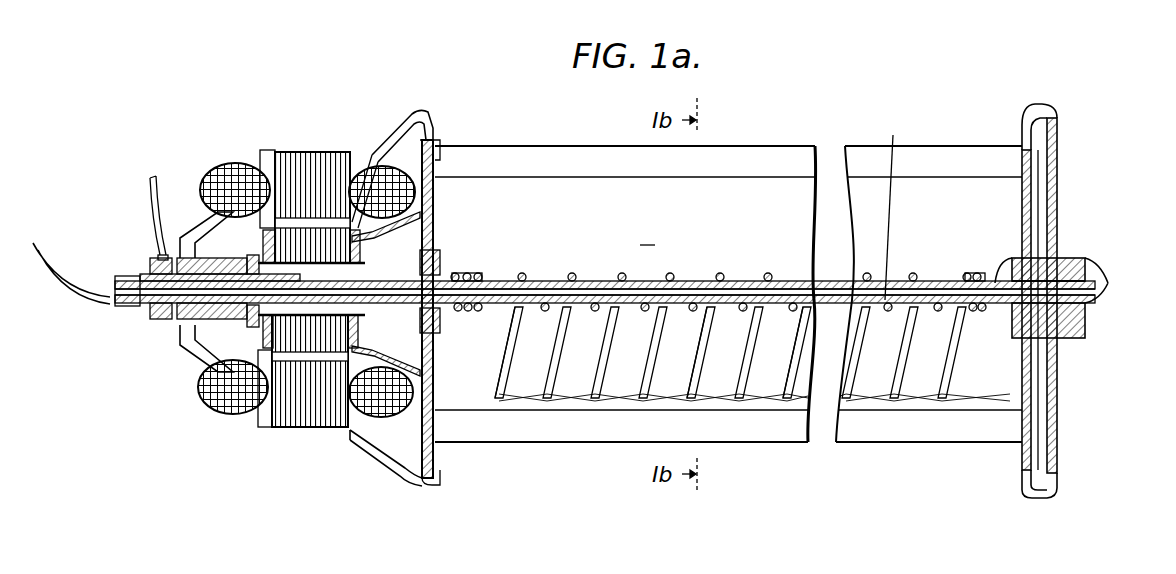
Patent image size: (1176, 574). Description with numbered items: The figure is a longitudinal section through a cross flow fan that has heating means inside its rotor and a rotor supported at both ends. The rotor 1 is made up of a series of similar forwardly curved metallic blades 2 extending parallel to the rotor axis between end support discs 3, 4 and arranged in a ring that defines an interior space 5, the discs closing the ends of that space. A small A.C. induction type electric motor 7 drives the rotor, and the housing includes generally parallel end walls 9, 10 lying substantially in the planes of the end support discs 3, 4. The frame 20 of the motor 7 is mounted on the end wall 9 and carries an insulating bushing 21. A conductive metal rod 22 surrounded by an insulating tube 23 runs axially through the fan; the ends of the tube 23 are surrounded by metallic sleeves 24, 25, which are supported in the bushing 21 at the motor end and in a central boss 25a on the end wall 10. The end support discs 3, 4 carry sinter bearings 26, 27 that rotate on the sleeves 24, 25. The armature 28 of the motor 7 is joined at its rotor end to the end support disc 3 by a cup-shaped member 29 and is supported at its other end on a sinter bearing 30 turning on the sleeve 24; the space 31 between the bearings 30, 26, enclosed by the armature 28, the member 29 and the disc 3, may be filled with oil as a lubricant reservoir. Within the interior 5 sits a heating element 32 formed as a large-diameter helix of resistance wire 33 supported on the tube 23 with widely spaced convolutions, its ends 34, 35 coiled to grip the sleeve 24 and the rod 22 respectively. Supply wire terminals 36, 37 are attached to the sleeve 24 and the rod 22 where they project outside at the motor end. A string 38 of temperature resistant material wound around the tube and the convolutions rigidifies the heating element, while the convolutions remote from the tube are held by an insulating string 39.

The rotor 1 is at (500, 160).
The blades 2 is at (612, 163).
The end support disc 3 is at (434, 205).
The end support disc 4 is at (1032, 205).
The interior space 5 is at (646, 232).
The electric motor 7 is at (332, 148).
The housing end wall 9 is at (428, 128).
The housing end wall 10 is at (1052, 140).
The frame 20 is at (195, 350).
The insulating bushing 21 is at (180, 322).
The conductive metal rod 22 is at (896, 205).
The insulating tube 23 is at (750, 270).
The metallic sleeve 24 is at (440, 308).
The metallic sleeve 25 is at (1040, 262).
The central boss 25a is at (1097, 300).
The sinter bearing 26 is at (440, 278).
The sinter bearing 27 is at (1058, 270).
The armature 28 is at (298, 243).
The cup-shaped member 29 is at (395, 200).
The sinter bearing 30 is at (246, 250).
The space 31 is at (412, 238).
The heating element 32 is at (770, 345).
The resistance wire 33 is at (654, 380).
The end of helix 34 is at (488, 270).
The end of helix 35 is at (978, 275).
The supply wire terminal 36 is at (165, 165).
The supply wire terminal 37 is at (65, 286).
The string 38 is at (745, 315).
The insulating string 39 is at (520, 400).